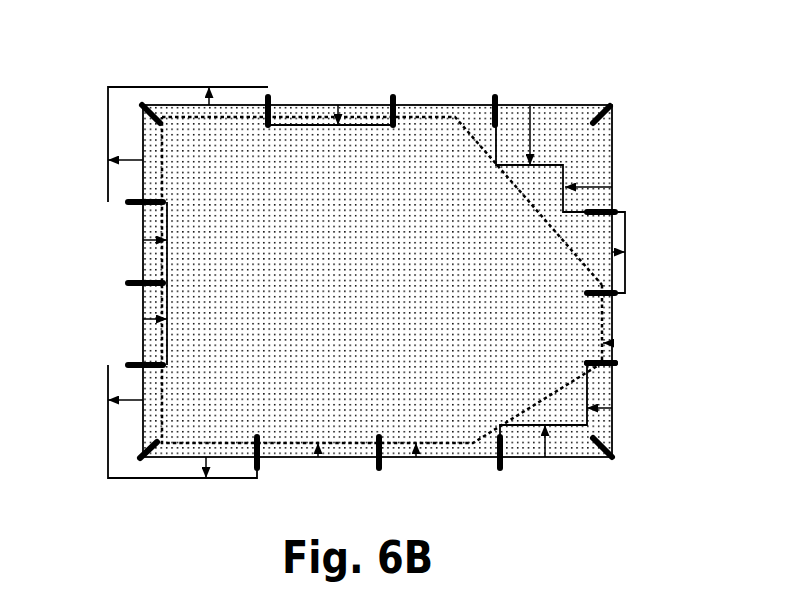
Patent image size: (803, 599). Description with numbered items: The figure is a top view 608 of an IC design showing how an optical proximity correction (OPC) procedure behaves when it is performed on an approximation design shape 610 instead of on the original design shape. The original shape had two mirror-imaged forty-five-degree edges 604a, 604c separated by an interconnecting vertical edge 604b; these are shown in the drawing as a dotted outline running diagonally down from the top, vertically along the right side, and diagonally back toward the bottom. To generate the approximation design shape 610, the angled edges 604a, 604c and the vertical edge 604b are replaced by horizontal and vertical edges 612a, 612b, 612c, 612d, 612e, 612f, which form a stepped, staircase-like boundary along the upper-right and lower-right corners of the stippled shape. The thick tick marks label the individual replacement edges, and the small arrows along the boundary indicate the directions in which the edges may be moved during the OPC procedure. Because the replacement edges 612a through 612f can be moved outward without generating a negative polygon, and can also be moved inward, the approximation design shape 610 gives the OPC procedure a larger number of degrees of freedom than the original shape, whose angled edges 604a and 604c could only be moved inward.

The top view 608 is at (73, 70).
The approximation design shape 610 is at (317, 105).
The horizontal and vertical edge 612a is at (482, 105).
The horizontal and vertical edge 612b is at (588, 105).
The horizontal and vertical edge 612c is at (612, 176).
The horizontal and vertical edge 612d is at (612, 240).
The horizontal and vertical edge 612e is at (614, 423).
The horizontal and vertical edge 612f is at (562, 457).
The mirror imaged 45° edge 604a is at (527, 200).
The interconnecting vertical edge 604b is at (603, 337).
The mirror imaged 45° edge 604c is at (553, 390).